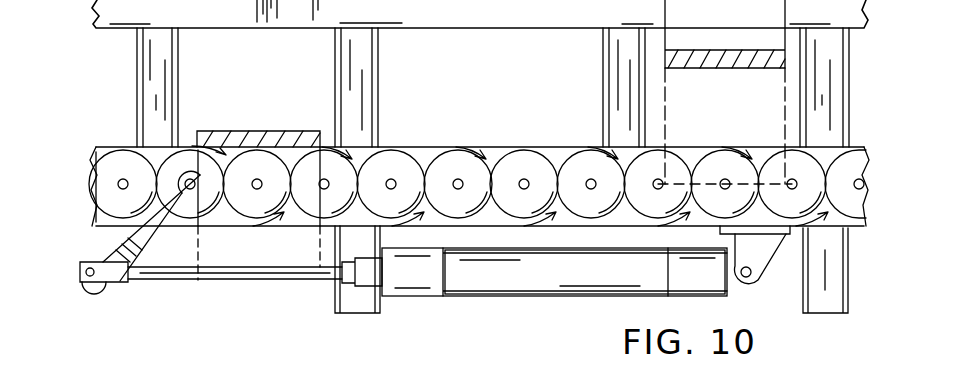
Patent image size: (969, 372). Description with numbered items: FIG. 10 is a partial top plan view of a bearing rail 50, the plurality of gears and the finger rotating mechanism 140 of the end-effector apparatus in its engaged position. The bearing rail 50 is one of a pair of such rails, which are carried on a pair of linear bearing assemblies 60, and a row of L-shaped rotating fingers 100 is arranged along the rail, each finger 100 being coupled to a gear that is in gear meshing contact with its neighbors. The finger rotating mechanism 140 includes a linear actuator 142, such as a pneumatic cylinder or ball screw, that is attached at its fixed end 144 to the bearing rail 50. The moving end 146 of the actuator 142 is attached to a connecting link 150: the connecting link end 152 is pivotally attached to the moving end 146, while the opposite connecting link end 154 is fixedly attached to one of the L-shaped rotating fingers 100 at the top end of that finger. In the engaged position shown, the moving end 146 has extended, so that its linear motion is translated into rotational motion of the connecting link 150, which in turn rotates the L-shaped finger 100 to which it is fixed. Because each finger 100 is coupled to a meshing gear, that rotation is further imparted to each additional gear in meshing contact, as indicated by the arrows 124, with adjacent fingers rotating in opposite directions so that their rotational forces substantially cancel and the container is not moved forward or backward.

The bearing rail 50 is at (94, 152).
The linear bearing assembly 60 is at (137, 47).
The L-shaped rotating finger 100 is at (524, 178).
The arrows 124 is at (472, 148).
The finger rotating mechanism 140 is at (435, 309).
The linear actuator 142 is at (513, 298).
The fixed end 144 is at (757, 276).
The moving end 146 is at (182, 280).
The connecting link 150 is at (91, 245).
The connecting link end 152 is at (92, 285).
The opposite connecting link end 154 is at (190, 182).